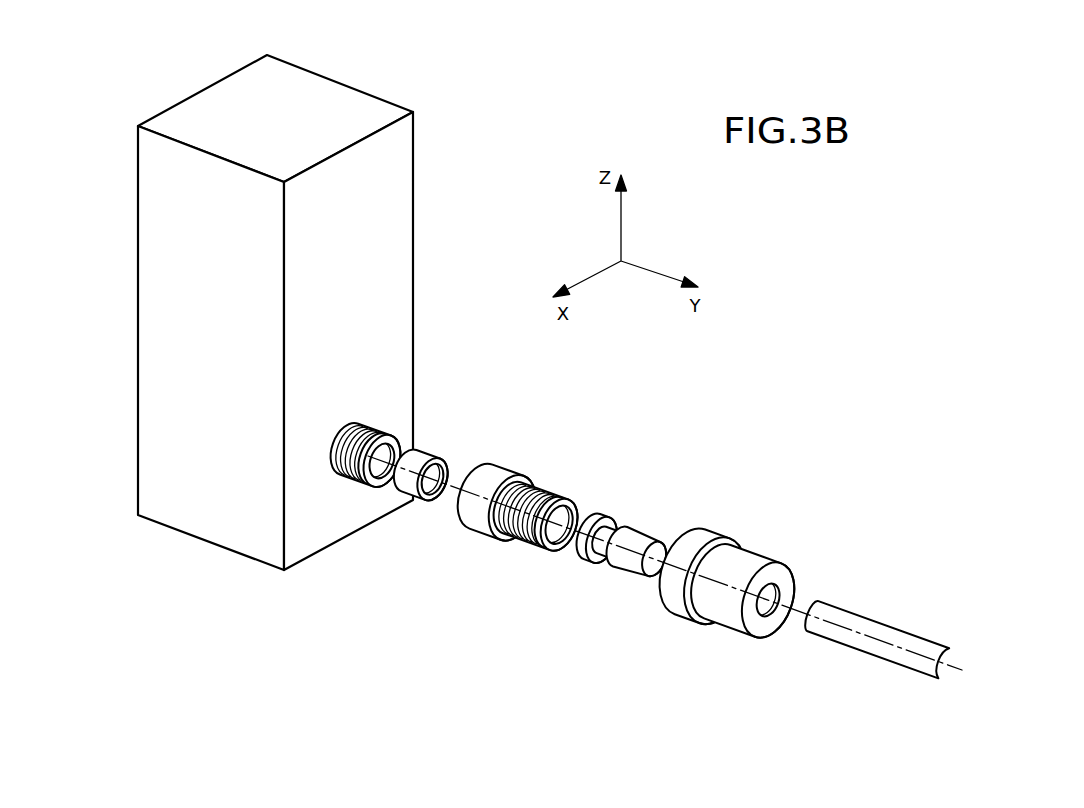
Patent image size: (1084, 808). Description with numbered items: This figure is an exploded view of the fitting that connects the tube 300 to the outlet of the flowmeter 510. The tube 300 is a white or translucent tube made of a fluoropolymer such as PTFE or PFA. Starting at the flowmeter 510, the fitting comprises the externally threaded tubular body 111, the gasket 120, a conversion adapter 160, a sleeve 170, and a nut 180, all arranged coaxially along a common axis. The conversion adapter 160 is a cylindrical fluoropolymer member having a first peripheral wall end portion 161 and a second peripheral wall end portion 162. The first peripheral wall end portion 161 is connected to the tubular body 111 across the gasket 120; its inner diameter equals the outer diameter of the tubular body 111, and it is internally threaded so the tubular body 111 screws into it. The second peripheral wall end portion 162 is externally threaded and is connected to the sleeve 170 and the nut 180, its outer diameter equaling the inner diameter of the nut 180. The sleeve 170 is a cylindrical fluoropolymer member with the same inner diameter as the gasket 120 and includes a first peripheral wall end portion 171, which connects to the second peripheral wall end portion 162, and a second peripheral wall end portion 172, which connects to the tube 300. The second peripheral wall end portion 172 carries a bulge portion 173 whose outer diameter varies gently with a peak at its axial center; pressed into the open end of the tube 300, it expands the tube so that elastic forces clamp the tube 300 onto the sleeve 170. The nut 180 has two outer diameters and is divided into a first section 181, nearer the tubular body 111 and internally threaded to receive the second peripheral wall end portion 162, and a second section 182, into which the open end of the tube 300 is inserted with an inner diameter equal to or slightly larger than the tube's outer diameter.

The flowmeter 510 is at (300, 103).
The tubular body 111 is at (387, 427).
The gasket 120 is at (432, 457).
The conversion adapter 160 is at (516, 468).
The first peripheral wall end portion 161 is at (509, 551).
The second peripheral wall end portion 162 is at (553, 567).
The sleeve 170 is at (623, 520).
The first peripheral wall end portion 171 is at (605, 582).
The second peripheral wall end portion 172 is at (605, 582).
The bulge portion 173 is at (650, 533).
The nut 180 is at (729, 533).
The first section 181 is at (720, 639).
The second section 182 is at (764, 654).
The tube 300 is at (867, 628).